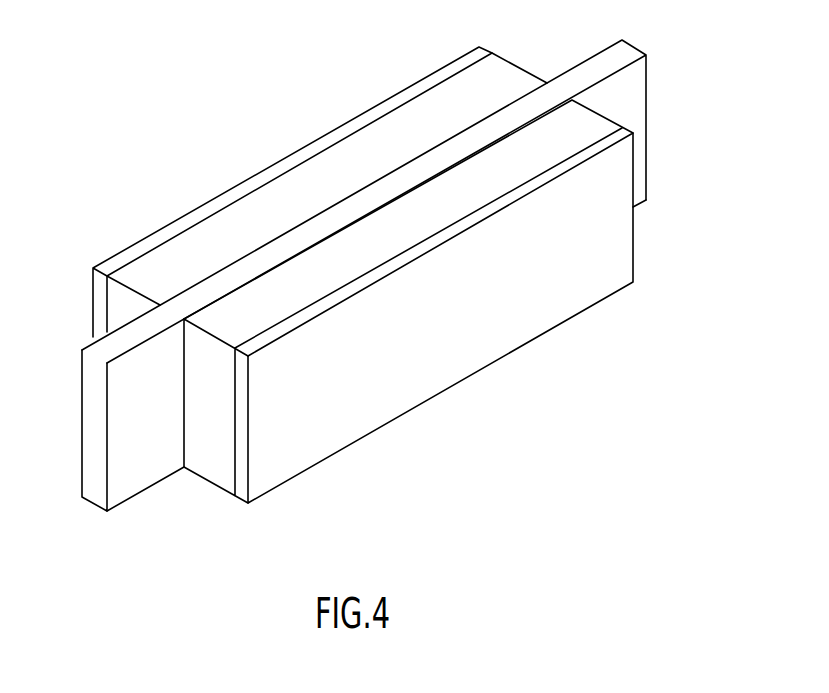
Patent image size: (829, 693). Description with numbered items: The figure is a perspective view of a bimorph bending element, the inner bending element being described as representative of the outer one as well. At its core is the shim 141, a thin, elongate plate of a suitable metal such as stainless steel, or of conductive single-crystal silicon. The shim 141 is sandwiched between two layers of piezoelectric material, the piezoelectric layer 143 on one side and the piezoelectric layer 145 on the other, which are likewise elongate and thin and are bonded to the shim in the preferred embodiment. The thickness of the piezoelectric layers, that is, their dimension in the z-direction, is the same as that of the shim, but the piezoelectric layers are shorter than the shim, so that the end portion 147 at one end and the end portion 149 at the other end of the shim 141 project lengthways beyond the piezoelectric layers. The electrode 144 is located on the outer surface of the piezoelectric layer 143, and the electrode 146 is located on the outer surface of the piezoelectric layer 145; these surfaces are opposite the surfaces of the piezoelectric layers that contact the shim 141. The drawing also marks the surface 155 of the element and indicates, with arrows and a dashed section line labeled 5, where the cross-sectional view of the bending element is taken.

The shim 141 is at (590, 72).
The piezoelectric layer 143 is at (214, 462).
The electrode 144 is at (358, 397).
The piezoelectric layer 145 is at (260, 202).
The electrode 146 is at (167, 222).
The end portion of the shim 147 is at (140, 435).
The end portion of the shim 149 is at (640, 155).
The top surface of block 155 is at (443, 298).
The section line 5- 5 is at (646, 112).